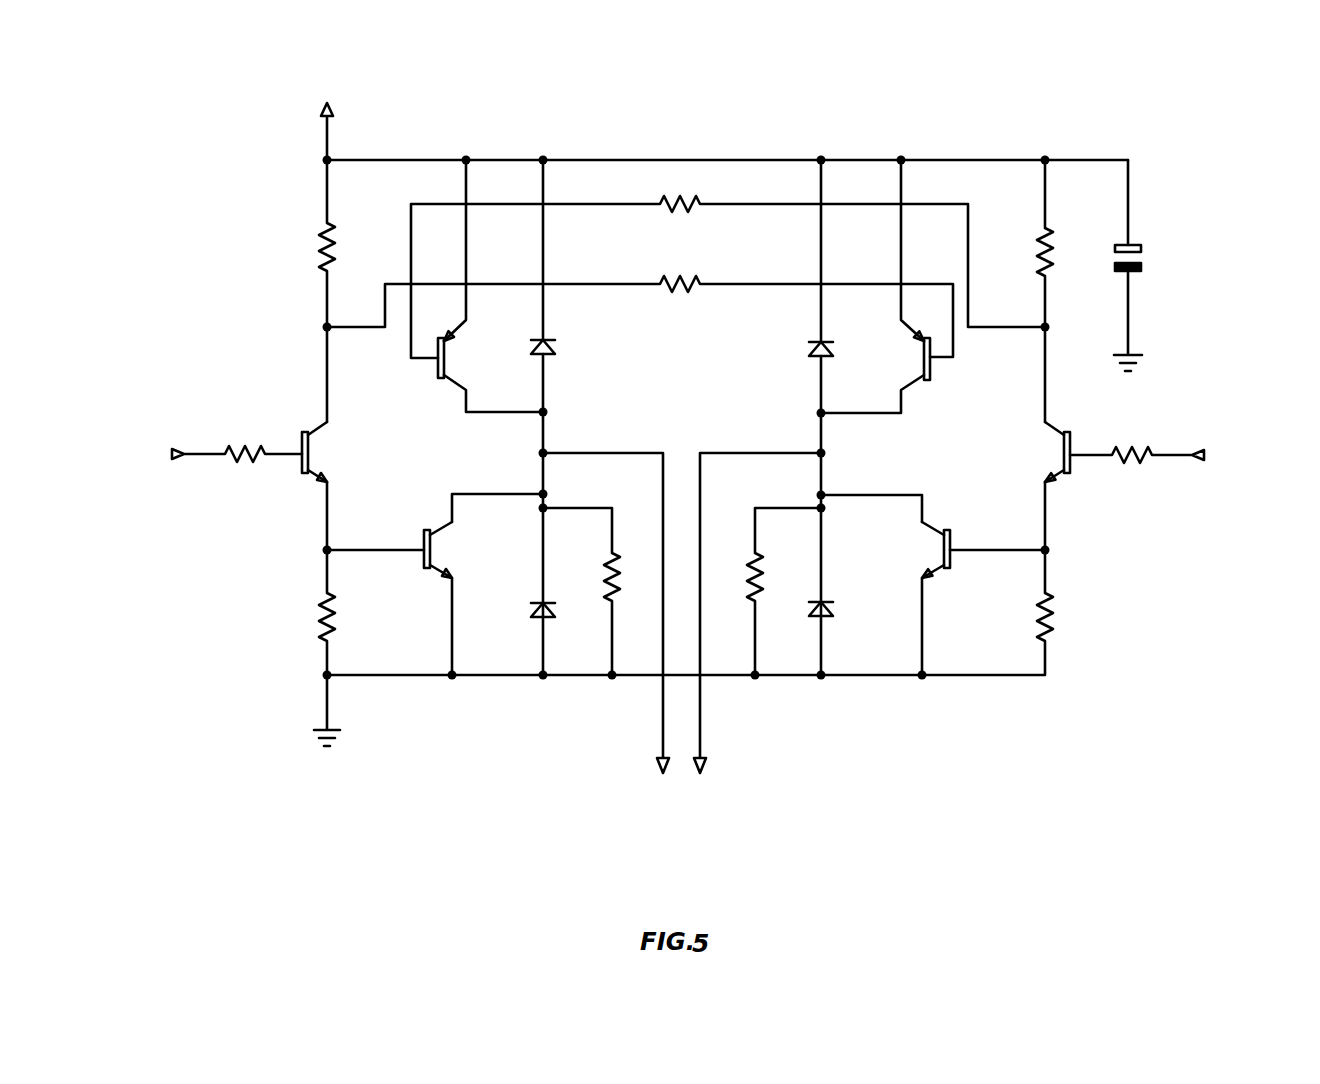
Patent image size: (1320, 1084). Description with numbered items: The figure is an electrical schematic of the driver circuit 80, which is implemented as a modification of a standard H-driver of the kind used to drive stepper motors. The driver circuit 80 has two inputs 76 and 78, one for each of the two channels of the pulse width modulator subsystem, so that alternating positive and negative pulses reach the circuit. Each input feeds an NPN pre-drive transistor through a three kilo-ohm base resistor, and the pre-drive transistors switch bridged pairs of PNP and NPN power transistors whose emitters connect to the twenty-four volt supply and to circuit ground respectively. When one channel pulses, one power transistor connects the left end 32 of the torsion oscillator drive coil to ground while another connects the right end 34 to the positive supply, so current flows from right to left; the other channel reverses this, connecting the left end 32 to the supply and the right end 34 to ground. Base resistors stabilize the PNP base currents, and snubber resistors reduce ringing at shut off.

The driver circuit 80 is at (698, 467).
The input 76 is at (208, 452).
The input 78 is at (1172, 452).
The left end 32 is at (661, 701).
The right end 34 is at (700, 712).